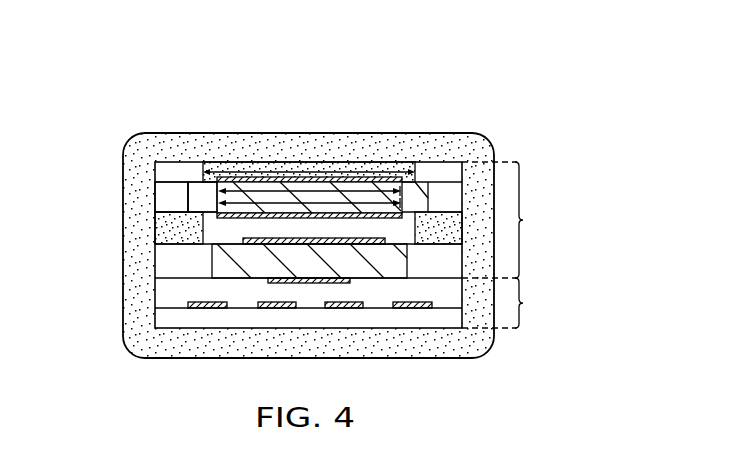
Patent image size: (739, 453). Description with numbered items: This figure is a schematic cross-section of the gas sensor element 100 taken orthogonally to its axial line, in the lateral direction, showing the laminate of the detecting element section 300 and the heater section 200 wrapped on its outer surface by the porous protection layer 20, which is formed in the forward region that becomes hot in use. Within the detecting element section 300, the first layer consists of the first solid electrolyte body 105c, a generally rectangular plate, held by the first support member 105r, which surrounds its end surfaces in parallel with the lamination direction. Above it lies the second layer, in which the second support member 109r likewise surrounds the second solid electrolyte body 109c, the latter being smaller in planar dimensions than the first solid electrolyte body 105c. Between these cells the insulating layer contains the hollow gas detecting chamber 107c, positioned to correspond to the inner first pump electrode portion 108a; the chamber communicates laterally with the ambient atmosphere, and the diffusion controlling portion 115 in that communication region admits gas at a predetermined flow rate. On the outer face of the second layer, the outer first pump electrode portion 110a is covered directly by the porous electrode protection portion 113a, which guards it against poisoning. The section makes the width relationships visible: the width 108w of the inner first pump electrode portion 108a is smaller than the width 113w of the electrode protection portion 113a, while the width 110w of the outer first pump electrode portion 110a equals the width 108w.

The gas sensor element 100 is at (443, 95).
The porous protection layer 20 is at (212, 152).
The width of the electrode protection portion 113w is at (250, 167).
The outer first pump electrode portion 110a is at (322, 167).
The electrode protection portion 113a is at (380, 167).
The width of the outer first pump electrode portion 110w is at (219, 216).
The second solid electrolyte body 109c is at (190, 212).
The width of the inner first pump electrode portion 108w is at (192, 193).
The second support member 109r is at (205, 207).
The diffusion controlling portion 115 is at (165, 224).
The inner first pump electrode portion 108a is at (192, 244).
The first support member 105r is at (185, 265).
The first solid electrolyte body 105c is at (230, 265).
The gas detecting chamber 107c is at (310, 235).
The detecting element section 300 is at (509, 220).
The heater section 200 is at (509, 303).